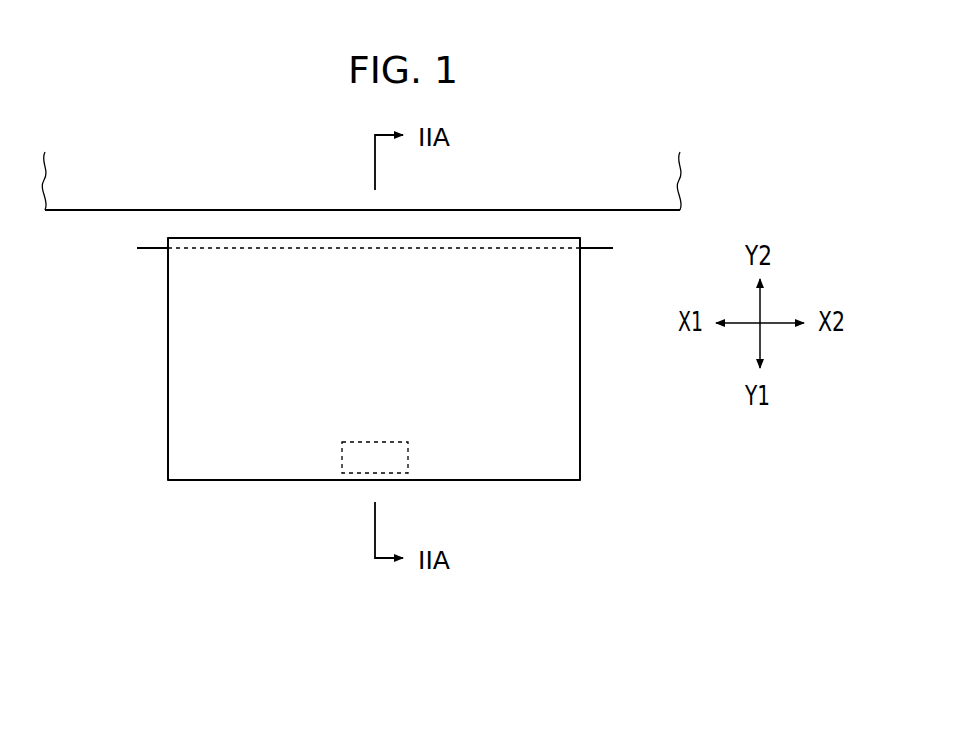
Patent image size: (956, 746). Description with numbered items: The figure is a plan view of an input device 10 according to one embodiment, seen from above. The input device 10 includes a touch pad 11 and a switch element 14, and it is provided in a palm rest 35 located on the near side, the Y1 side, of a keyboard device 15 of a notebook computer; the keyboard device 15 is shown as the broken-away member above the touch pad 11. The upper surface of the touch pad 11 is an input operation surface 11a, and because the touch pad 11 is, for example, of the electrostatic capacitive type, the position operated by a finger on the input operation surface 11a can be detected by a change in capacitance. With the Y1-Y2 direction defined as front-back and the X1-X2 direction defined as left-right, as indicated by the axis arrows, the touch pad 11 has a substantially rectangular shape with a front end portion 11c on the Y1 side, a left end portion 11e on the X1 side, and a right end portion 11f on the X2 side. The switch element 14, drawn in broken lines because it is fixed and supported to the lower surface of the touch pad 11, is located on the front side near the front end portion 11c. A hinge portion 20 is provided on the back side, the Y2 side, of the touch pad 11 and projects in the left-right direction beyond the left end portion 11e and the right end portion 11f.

The input device 10 is at (612, 316).
The touch pad 11 is at (553, 410).
The input operation surface 11a is at (490, 238).
The front end portion 11c is at (505, 482).
The left end portion 11e is at (168, 365).
The right end portion 11f is at (580, 365).
The switch element 14 is at (360, 475).
The keyboard device 15 is at (668, 178).
The hinge portion 20 is at (240, 248).
The palm rest 35 is at (142, 443).